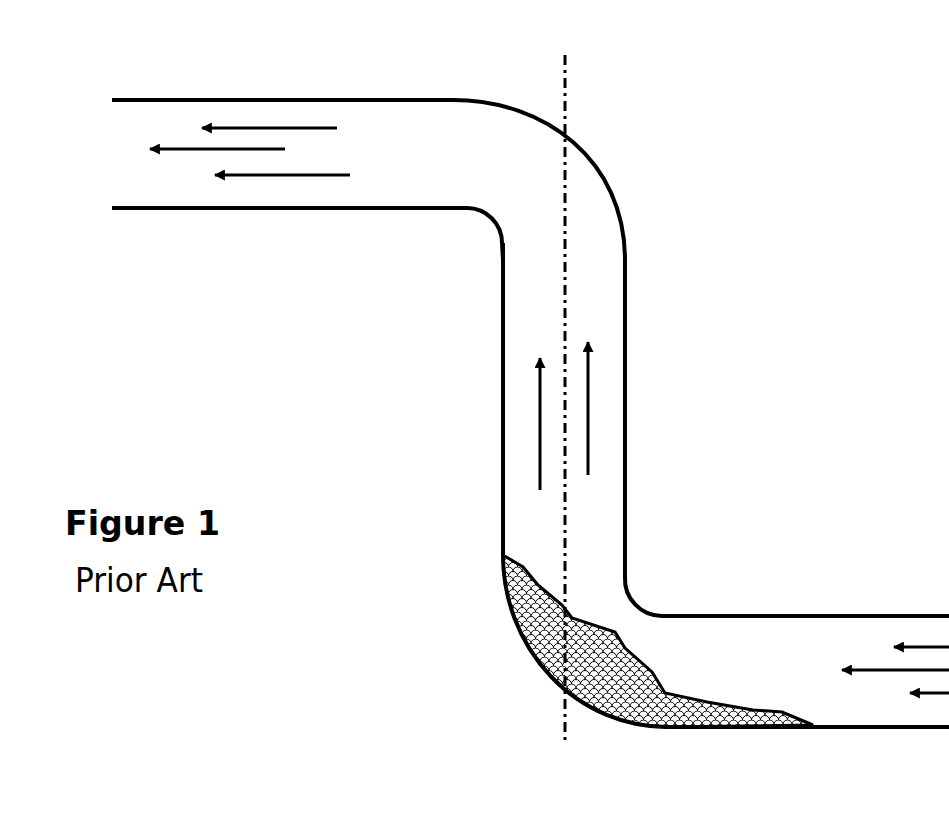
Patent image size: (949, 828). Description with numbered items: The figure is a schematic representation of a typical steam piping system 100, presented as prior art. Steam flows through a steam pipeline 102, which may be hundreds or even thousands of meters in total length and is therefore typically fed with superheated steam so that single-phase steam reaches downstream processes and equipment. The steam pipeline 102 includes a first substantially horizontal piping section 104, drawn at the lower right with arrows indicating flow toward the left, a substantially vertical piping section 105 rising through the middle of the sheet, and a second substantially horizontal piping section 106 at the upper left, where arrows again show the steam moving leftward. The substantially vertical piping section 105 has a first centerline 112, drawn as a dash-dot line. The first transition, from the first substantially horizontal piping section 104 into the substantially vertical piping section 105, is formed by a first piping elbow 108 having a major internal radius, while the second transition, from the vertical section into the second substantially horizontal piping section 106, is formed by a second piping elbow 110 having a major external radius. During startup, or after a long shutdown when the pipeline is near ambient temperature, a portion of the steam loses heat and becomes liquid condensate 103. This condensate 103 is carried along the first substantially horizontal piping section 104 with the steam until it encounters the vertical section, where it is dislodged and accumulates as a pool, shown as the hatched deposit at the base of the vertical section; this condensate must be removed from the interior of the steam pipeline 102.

The steam piping system 100 is at (427, 367).
The steam pipeline 102 is at (307, 180).
The condensate 103 is at (588, 664).
The first substantially horizontal piping section 104 is at (805, 650).
The substantially vertical piping section 105 is at (594, 410).
The second substantially horizontal piping section 106 is at (250, 118).
The first piping elbow 108 is at (655, 591).
The second piping elbow 110 is at (600, 144).
The centerline of substantially vertical piping section 112 is at (565, 374).